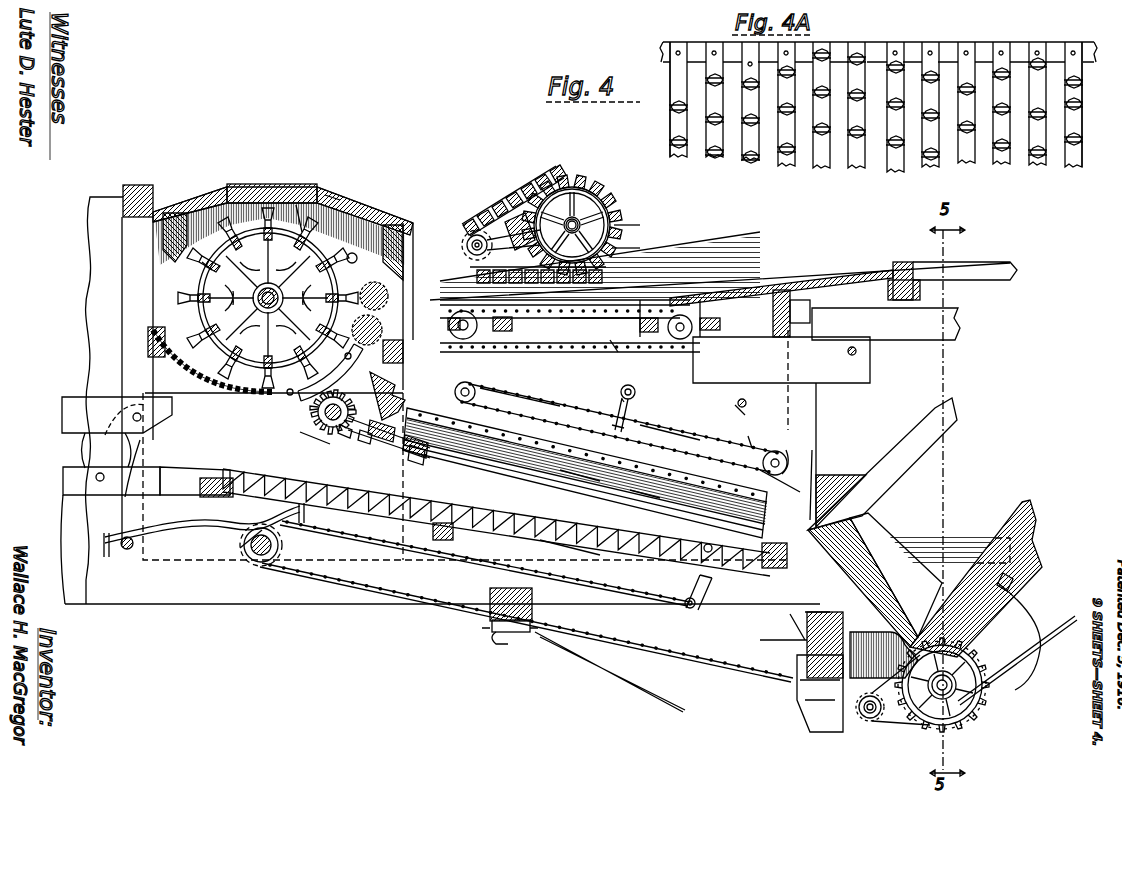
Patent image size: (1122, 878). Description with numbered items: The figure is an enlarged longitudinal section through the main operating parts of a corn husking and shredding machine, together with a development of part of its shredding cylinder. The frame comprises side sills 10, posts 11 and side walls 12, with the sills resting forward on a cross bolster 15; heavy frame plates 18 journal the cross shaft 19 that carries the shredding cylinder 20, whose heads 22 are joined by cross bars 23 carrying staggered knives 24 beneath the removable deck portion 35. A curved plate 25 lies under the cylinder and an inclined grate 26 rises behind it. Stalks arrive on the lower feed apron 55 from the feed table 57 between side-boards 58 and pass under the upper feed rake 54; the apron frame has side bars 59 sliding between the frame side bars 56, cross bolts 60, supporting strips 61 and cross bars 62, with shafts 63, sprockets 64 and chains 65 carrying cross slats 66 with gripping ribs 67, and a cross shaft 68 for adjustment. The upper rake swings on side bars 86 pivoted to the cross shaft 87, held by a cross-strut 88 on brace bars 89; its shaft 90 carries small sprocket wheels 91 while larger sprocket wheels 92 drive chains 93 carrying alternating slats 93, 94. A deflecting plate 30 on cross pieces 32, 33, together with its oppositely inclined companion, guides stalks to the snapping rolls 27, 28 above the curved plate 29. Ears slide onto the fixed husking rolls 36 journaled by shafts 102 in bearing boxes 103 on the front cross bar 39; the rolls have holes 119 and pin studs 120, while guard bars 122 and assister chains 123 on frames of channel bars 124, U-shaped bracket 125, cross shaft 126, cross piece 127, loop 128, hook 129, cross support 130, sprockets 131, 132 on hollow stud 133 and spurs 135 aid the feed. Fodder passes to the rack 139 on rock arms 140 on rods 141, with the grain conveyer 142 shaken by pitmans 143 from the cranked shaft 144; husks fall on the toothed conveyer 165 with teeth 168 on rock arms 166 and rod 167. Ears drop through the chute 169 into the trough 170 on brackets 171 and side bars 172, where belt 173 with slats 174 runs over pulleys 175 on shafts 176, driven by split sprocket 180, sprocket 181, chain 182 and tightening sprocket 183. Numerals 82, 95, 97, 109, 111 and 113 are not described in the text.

In FIG. 4, the side sills 10 is at (328, 595).
In FIG. 4, the posts 11 is at (125, 282).
In FIG. 4, the side walls 12 is at (492, 540).
In FIG. 4, the cross bolster 15 is at (805, 640).
In FIG. 4, the frame plates 18 is at (250, 298).
In FIG. 4, the cross shaft 19 is at (215, 307).
In FIG. 4, the shredding cylinder 20 is at (305, 262).
In FIG. 4A, the shredding cylinder 20 is at (980, 80).
In FIG. 4, the end plates or heads 22 is at (300, 290).
In FIG. 4A, the end plates or heads 22 is at (915, 50).
In FIG. 4, the cross bars 23 is at (212, 238).
In FIG. 4A, the cross bars 23 is at (900, 160).
In FIG. 4, the knives 24 is at (302, 230).
In FIG. 4A, the knives 24 is at (1035, 160).
In FIG. 4, the curved plate 25 is at (345, 360).
In FIG. 4, the inclined grate 26 is at (215, 385).
In FIG. 4, the upper snapping roll 27 is at (390, 300).
In FIG. 4, the lower snapping roll 28 is at (383, 330).
In FIG. 4, the curved plate 29 is at (398, 352).
In FIG. 4, the deflecting plate 30 is at (392, 285).
In FIG. 4, the cross piece 32 is at (355, 258).
In FIG. 4, the cross piece 33 is at (380, 372).
In FIG. 4, the roof or deck portion 35 is at (335, 205).
In FIG. 4, the husking roll 36 is at (465, 455).
In FIG. 4, the front cross bar 39 is at (392, 240).
In FIG. 4, the upper feed rake 54 is at (568, 175).
In FIG. 4, the lower feed apron 55 is at (620, 263).
In FIG. 4, the side bars 56 is at (735, 345).
In FIG. 4, the feed table 57 is at (740, 290).
In FIG. 4, the side-boards 58 is at (715, 263).
In FIG. 4, the side bars 59 is at (655, 270).
In FIG. 4, the cross bolts 60 is at (502, 352).
In FIG. 4, the supporting strips 61 is at (578, 346).
In FIG. 4, the cross bars 62 is at (625, 348).
In FIG. 4, the shafts 63 is at (470, 340).
In FIG. 4, the sprockets 64 is at (508, 303).
In FIG. 4, the sprocket chains 65 is at (555, 350).
In FIG. 4, the cross slats 66 is at (614, 345).
In FIG. 4, the cross ribs 67 is at (688, 340).
In FIG. 4, the cross shaft 68 is at (848, 353).
In FIG. 4, the arm 82 is at (740, 410).
In FIG. 4, the side bars 86 is at (552, 178).
In FIG. 4, the cross shaft 87 is at (605, 222).
In FIG. 4, the cross-strut 88 is at (535, 185).
In FIG. 4, the bent brace bars 89 is at (565, 210).
In FIG. 4, the shaft 90 is at (465, 238).
In FIG. 4, the small sprocket wheels 91 is at (465, 240).
In FIG. 4, the sprocket wheels 92 is at (625, 250).
In FIG. 4, the chains / cross slats 93 is at (578, 185).
In FIG. 4, the cross slats 94 is at (625, 225).
In FIG. 4, the chain link 95 is at (500, 212).
In FIG. 4, the shaft 97 is at (300, 440).
In FIG. 4, the shafts 102 is at (385, 450).
In FIG. 4, the bearing boxes 103 is at (408, 462).
In FIG. 4, the collar 109 is at (365, 445).
In FIG. 4, the collar 111 is at (345, 445).
In FIG. 4, the gear 113 is at (310, 418).
In FIG. 4, the holes 119 is at (640, 495).
In FIG. 4, the brass studs 120 is at (575, 470).
In FIG. 4, the guard bars 122 is at (838, 470).
In FIG. 4, the feed chains 123 is at (680, 430).
In FIG. 4, the guiding channel bars 124 is at (575, 405).
In FIG. 4, the U-shaped bracket 125 is at (770, 450).
In FIG. 4, the cross shaft 126 is at (800, 460).
In FIG. 4, the cross piece 127 is at (618, 427).
In FIG. 4, the looped portion 128 is at (624, 412).
In FIG. 4, the hook 129 is at (635, 390).
In FIG. 4, the cross support 130 is at (632, 398).
In FIG. 4, the sprocket 131 is at (788, 452).
In FIG. 4, the sprocket 132 is at (540, 395).
In FIG. 4, the hollow stud 133 is at (460, 390).
In FIG. 4, the spurs 135 is at (742, 399).
In FIG. 4, the fodder rack 139 is at (85, 410).
In FIG. 4, the rock arms 140 is at (120, 432).
In FIG. 4, the cross supporting rods 141 is at (70, 490).
In FIG. 4, the grain conveyer 142 is at (155, 478).
In FIG. 4, the pitmans 143 is at (195, 530).
In FIG. 4, the cranked shaft 144 is at (245, 555).
In FIG. 4, the husk conveyer 165 is at (560, 540).
In FIG. 4, the rock arms 166 is at (706, 580).
In FIG. 4, the cross supporting rod 167 is at (682, 600).
In FIG. 4, the teeth 168 is at (450, 520).
In FIG. 4, the chute 169 is at (865, 530).
In FIG. 4, the trough 170 is at (985, 530).
In FIG. 4, the brackets 171 is at (878, 720).
In FIG. 4, the side bars 172 is at (963, 334).
In FIG. 4, the conveyer belt 173 is at (990, 670).
In FIG. 4, the cross slats 174 is at (1000, 585).
In FIG. 4, the pulleys 175 is at (975, 660).
In FIG. 4, the shafts 176 is at (970, 720).
In FIG. 4, the split sprocket wheel 180 is at (255, 565).
In FIG. 4, the sprocket wheel 181 is at (1005, 688).
In FIG. 4, the drive chain 182 is at (715, 660).
In FIG. 4, the tightening sprocket 183 is at (860, 735).